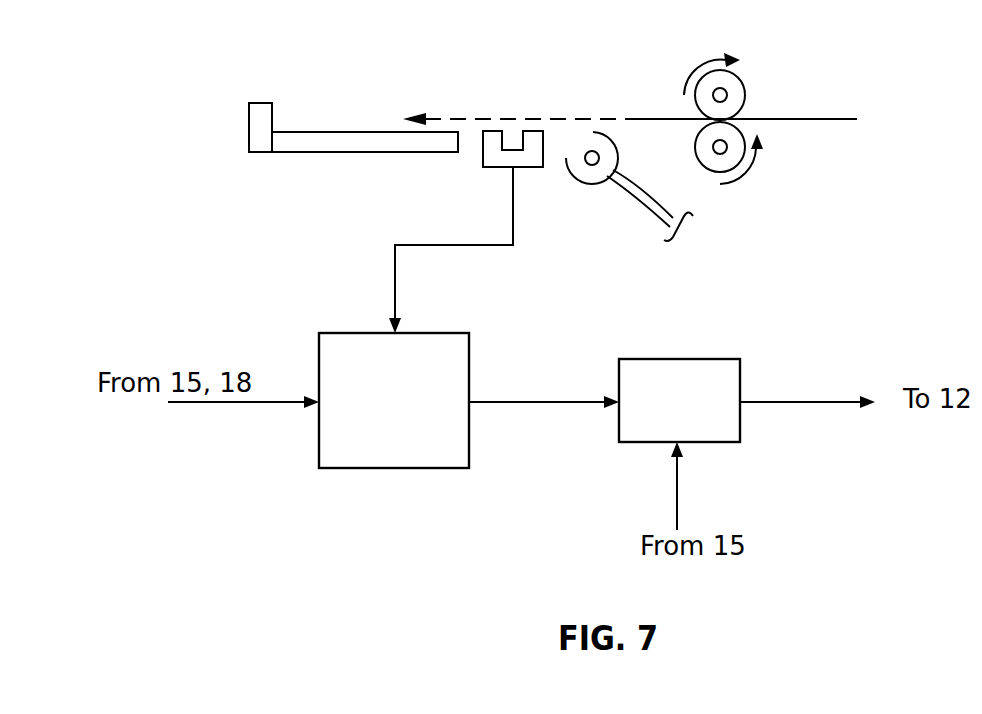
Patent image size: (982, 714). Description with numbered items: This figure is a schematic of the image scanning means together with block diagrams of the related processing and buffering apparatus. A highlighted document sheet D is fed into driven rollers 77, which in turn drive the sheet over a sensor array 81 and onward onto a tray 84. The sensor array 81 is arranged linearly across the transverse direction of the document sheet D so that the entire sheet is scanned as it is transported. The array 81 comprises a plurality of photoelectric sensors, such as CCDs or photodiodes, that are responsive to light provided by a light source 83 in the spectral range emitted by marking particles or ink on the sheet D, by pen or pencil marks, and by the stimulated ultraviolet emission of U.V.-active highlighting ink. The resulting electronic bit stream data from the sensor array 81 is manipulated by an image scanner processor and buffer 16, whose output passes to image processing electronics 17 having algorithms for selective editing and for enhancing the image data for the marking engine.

The driven rollers 77 is at (747, 88).
The document sheet D is at (796, 119).
The tray 84 is at (350, 115).
The sensor array 81 is at (495, 168).
The light source 83 is at (590, 184).
The image scanner processor and buffer 16 is at (375, 468).
The image processing electronics 17 is at (682, 359).